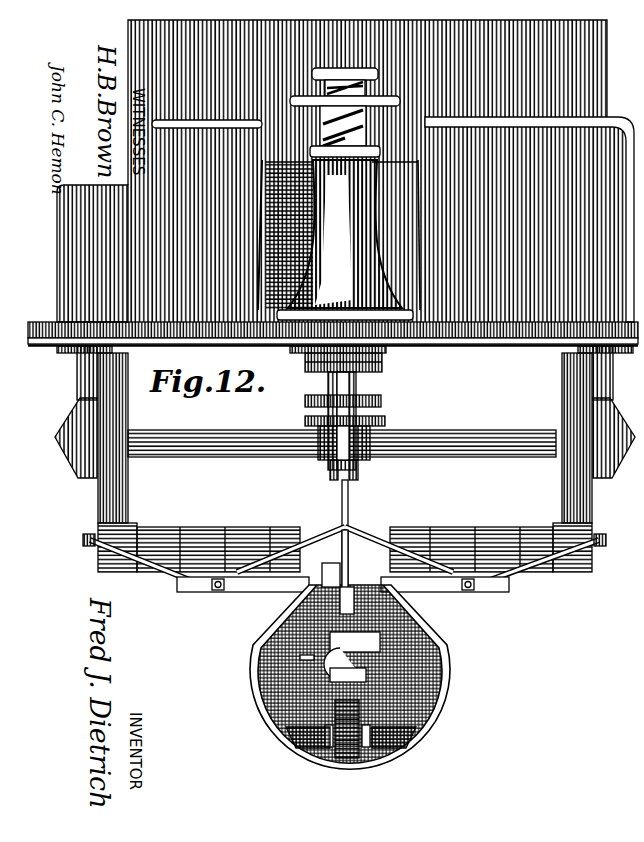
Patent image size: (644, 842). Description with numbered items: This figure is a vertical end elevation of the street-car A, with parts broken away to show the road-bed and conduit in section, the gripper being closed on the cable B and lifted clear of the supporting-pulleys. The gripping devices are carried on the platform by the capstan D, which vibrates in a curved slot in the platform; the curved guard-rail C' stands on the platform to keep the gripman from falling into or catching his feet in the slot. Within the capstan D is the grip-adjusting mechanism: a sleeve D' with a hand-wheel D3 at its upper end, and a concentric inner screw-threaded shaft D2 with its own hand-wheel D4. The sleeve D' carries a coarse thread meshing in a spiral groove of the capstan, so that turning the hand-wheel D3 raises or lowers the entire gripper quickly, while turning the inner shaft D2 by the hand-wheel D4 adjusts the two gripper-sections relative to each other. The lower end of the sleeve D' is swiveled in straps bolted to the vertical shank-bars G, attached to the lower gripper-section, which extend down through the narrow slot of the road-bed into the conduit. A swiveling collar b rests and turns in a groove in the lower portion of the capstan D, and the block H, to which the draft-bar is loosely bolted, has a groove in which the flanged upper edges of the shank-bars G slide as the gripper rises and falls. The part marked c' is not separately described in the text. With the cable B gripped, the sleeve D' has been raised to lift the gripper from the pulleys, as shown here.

The hand-wheel D4 is at (315, 77).
The screw-threaded inner shaft D2 is at (360, 91).
The hand-wheel D3 is at (326, 118).
The screw-threaded sleeve D' is at (346, 275).
The capstan D is at (345, 234).
The curved guard-rail C' is at (405, 235).
The bearing block c' is at (334, 453).
The swiveling collar b is at (306, 354).
The block H is at (381, 402).
The vertical shank-bars G is at (348, 498).
The street-car A is at (290, 617).
The cable B is at (362, 646).